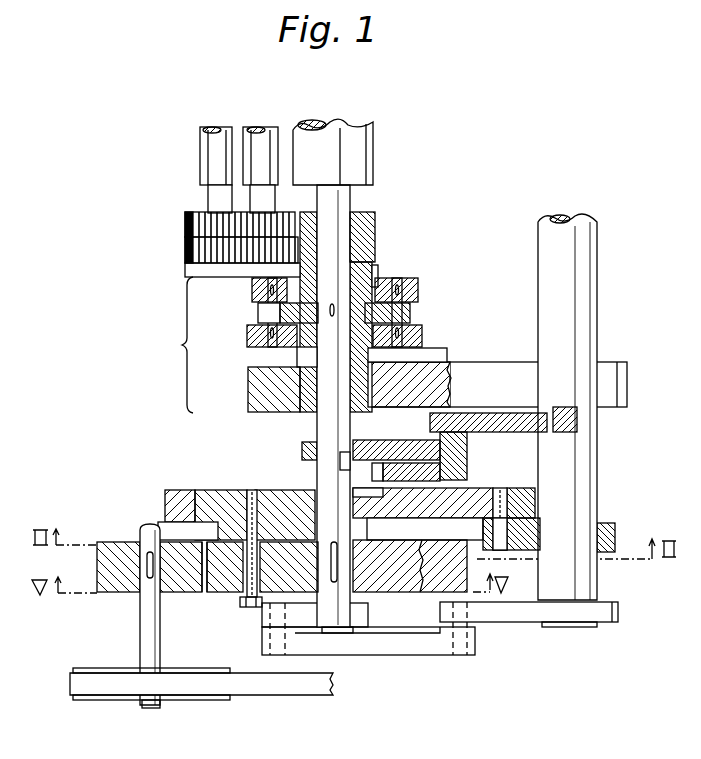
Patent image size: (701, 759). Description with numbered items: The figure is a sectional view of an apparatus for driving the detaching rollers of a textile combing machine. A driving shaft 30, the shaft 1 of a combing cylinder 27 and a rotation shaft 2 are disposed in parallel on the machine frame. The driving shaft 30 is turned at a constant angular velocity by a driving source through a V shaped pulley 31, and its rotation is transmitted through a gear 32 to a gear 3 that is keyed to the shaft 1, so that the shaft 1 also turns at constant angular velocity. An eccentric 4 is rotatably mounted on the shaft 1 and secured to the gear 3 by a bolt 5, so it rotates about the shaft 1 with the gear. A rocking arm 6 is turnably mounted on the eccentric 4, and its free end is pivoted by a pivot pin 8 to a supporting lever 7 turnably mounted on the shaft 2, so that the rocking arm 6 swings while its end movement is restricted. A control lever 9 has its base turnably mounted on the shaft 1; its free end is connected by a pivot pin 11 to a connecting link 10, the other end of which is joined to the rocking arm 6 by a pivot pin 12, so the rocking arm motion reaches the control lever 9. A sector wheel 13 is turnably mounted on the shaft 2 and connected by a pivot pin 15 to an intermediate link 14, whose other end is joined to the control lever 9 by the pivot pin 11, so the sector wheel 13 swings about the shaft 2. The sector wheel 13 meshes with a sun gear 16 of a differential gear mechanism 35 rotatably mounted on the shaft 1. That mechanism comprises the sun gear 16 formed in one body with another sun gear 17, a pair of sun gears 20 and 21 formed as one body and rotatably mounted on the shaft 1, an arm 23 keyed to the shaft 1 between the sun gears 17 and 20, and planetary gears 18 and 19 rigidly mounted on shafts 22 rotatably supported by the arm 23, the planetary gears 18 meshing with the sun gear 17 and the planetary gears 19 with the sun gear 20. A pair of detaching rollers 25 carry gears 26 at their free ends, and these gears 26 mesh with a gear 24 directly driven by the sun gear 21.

The shaft 1 is at (322, 478).
The rotation shaft 2 is at (598, 469).
The gear 3 is at (217, 589).
The eccentric 4 is at (218, 498).
The bolt 5 is at (249, 606).
The rocking arm 6 is at (422, 585).
The supporting lever 7 is at (522, 552).
The pivot pin 8 is at (504, 500).
The control lever 9 is at (366, 443).
The connecting link 10 is at (464, 466).
The pivot pin 11 is at (440, 436).
The pivot pin 12 is at (352, 462).
The sector wheel 13 is at (506, 377).
The intermediate link 14 is at (516, 424).
The pivot pin 15 is at (559, 433).
The sun gear 16 is at (268, 393).
The sun gear 17 is at (306, 352).
The planetary gears 18 is at (252, 344).
The planetary gears 19 is at (252, 291).
The sun gear 20 is at (386, 284).
The sun gear 21 is at (368, 215).
The shafts 22 is at (262, 314).
The arm 23 is at (376, 270).
The gear 24 is at (190, 252).
The detaching rollers 25 is at (208, 128).
The gears 26 is at (198, 220).
The combing cylinder 27 is at (347, 128).
The driving shaft 30 is at (142, 641).
The V shaped pulley 31 is at (103, 701).
The gear 32 is at (114, 589).
The differential gear mechanism 35 is at (169, 345).